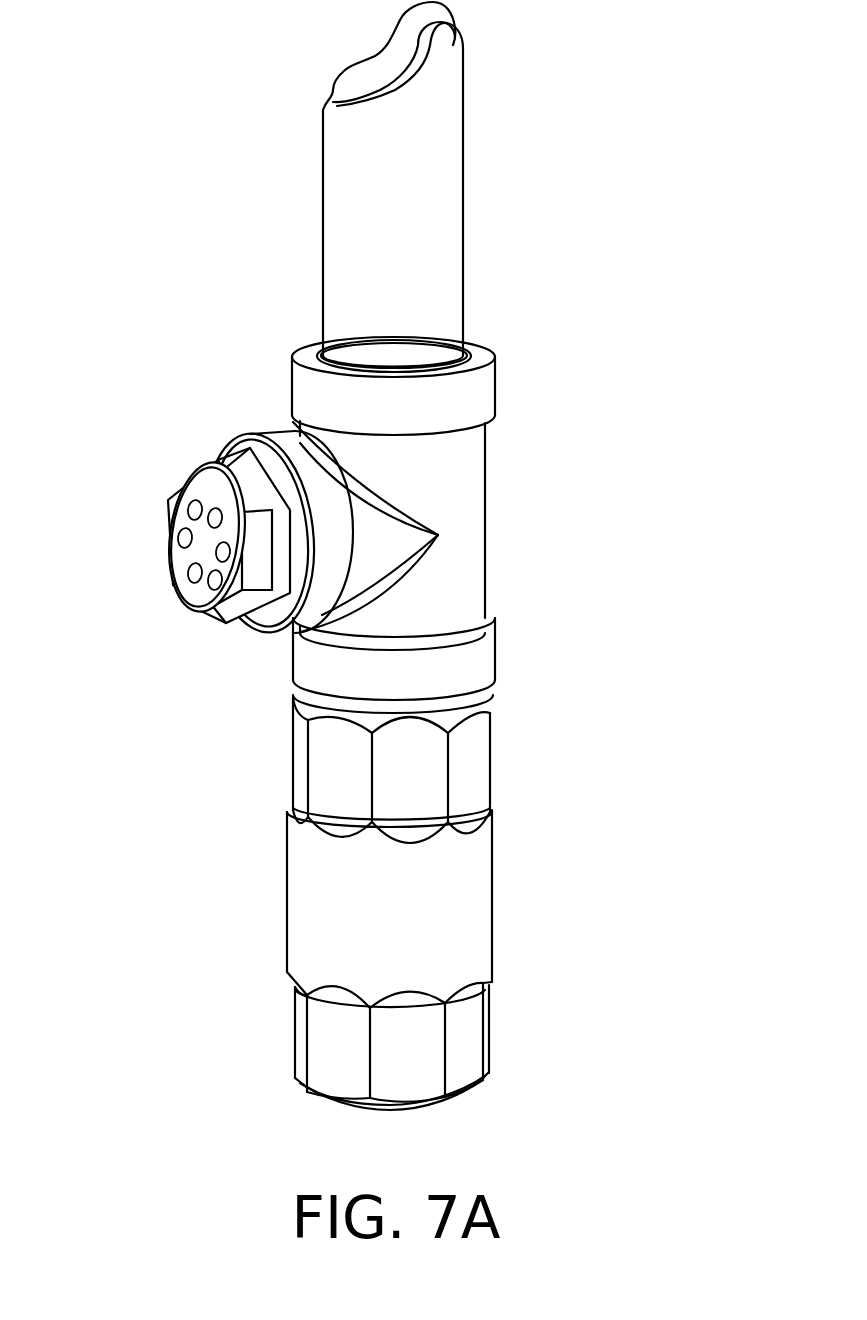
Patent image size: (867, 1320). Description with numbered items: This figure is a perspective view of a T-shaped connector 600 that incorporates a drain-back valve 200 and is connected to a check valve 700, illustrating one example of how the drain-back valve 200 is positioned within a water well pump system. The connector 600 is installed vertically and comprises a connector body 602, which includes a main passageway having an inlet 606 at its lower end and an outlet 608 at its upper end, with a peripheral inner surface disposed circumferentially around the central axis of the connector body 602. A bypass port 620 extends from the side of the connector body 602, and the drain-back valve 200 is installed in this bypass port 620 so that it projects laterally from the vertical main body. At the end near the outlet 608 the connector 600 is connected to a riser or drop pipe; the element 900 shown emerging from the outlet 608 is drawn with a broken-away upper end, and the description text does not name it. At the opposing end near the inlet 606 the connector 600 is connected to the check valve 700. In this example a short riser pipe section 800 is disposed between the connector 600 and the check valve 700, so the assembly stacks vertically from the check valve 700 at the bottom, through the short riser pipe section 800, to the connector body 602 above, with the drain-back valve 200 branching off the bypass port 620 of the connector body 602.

The cable 900 is at (345, 148).
The T-shaped connector 600 is at (522, 370).
The outlet 608 is at (397, 356).
The connector body 602 is at (477, 482).
The bypass port 620 is at (273, 433).
The drain-back valve 200 is at (168, 480).
The inlet 606 is at (487, 702).
The short riser pipe section 800 is at (305, 713).
The check valve 700 is at (510, 852).